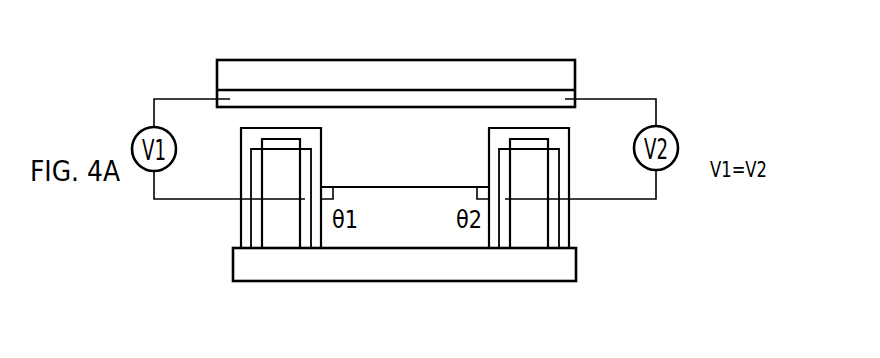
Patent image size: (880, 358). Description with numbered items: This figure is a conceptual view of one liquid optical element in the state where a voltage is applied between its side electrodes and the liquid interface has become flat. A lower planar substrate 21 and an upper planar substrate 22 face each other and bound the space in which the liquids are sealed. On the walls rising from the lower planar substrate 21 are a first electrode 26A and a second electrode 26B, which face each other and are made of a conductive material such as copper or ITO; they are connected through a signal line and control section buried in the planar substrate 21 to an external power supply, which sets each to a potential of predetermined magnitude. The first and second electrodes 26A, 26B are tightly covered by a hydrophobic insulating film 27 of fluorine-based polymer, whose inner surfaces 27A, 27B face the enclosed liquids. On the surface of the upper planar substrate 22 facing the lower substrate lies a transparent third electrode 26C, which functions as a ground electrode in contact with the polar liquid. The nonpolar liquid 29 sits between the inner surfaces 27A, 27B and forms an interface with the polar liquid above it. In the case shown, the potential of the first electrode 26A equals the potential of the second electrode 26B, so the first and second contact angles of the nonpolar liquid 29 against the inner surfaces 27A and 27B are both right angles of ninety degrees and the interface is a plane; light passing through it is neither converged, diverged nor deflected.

The planar substrate 21 is at (555, 270).
The planar substrate 22 is at (241, 67).
The first electrode 26A is at (308, 241).
The second electrode 26B is at (510, 241).
The third electrode 26C is at (522, 100).
The hydrophobic insulating film 27 is at (247, 241).
The inner surface 27A is at (324, 135).
The inner surface 27B is at (486, 135).
The nonpolar liquid 29 is at (405, 223).